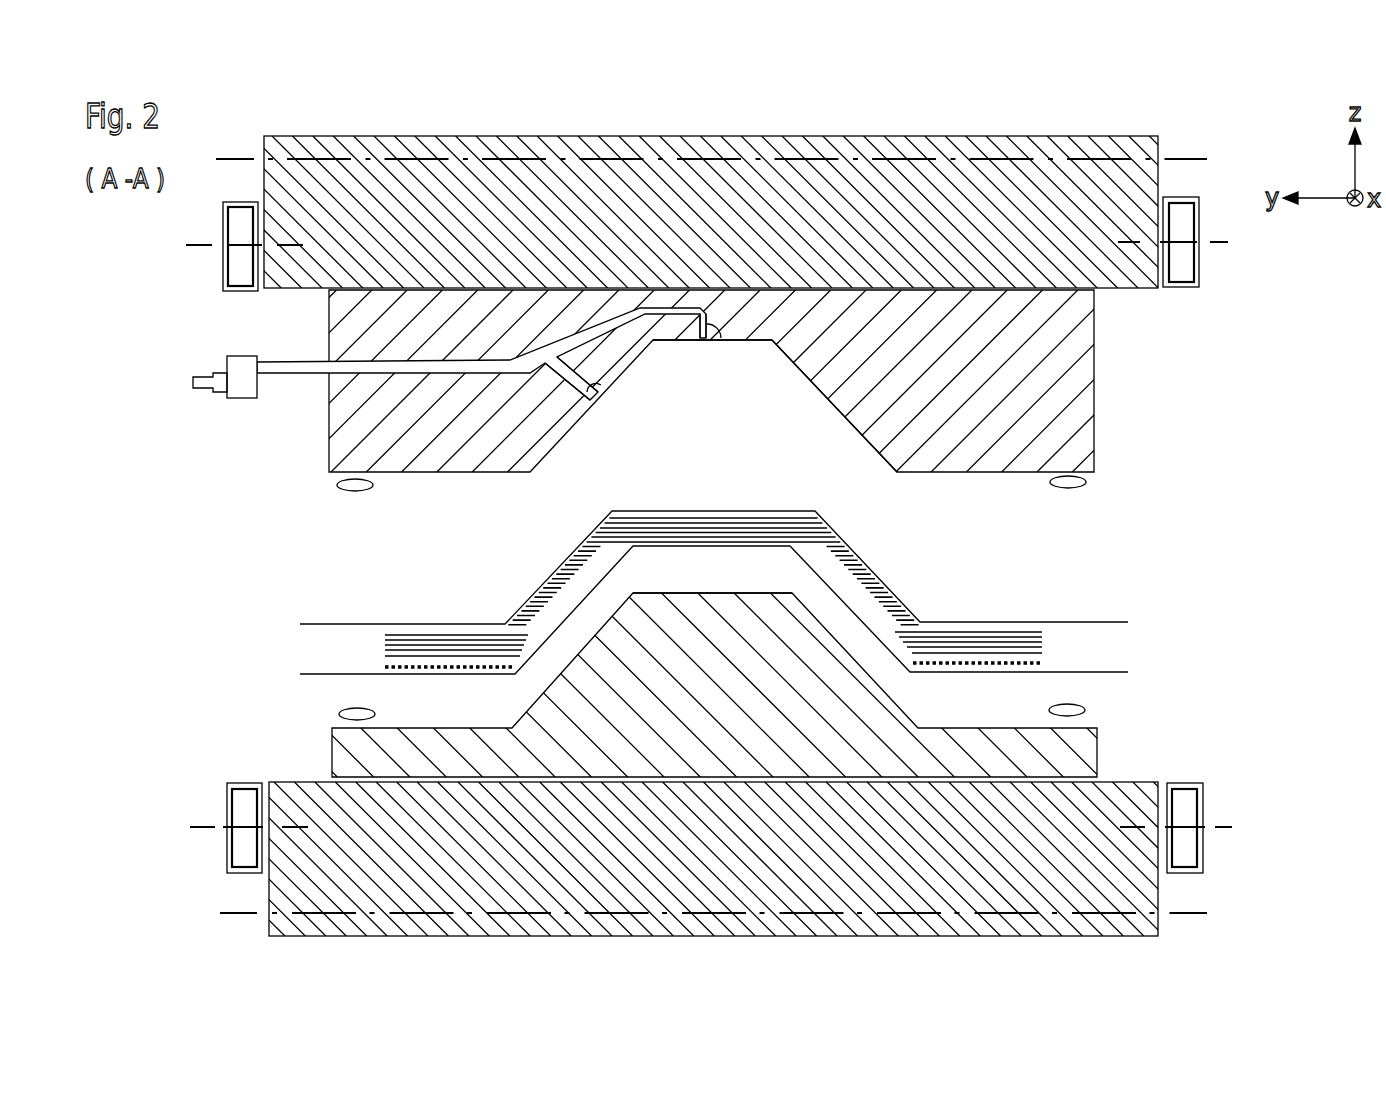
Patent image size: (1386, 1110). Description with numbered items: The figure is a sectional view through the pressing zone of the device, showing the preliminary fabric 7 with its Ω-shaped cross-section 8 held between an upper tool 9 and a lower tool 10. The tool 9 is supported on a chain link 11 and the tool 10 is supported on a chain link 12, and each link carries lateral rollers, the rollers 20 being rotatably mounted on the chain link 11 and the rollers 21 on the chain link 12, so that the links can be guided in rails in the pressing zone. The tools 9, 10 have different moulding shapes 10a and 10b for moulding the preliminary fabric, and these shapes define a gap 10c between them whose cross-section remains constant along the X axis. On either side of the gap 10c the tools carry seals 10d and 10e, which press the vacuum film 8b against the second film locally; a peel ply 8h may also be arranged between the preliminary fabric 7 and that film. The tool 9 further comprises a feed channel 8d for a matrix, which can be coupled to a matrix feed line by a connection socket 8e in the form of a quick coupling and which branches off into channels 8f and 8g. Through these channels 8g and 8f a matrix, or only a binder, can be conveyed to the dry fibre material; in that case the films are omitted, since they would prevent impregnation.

The preliminary fabric 7 is at (858, 571).
The Ω-shaped cross-section 8 is at (752, 527).
The vacuum film 8b is at (1103, 620).
The feed channel 8d is at (282, 376).
The connection socket 8e is at (199, 392).
The channel 8f is at (598, 383).
The channel 8g is at (719, 331).
The peel ply 8h is at (989, 667).
The tool 9 is at (1080, 379).
The tool 10 is at (1085, 750).
The moulding shape 10a is at (850, 426).
The moulding shape 10b is at (694, 593).
The gap 10c is at (727, 447).
The seal 10d is at (354, 491).
The seal 10e is at (340, 712).
The chain link 11 is at (290, 181).
The chain link 12 is at (296, 893).
The lateral roller 20 is at (240, 272).
The lateral roller 21 is at (235, 806).